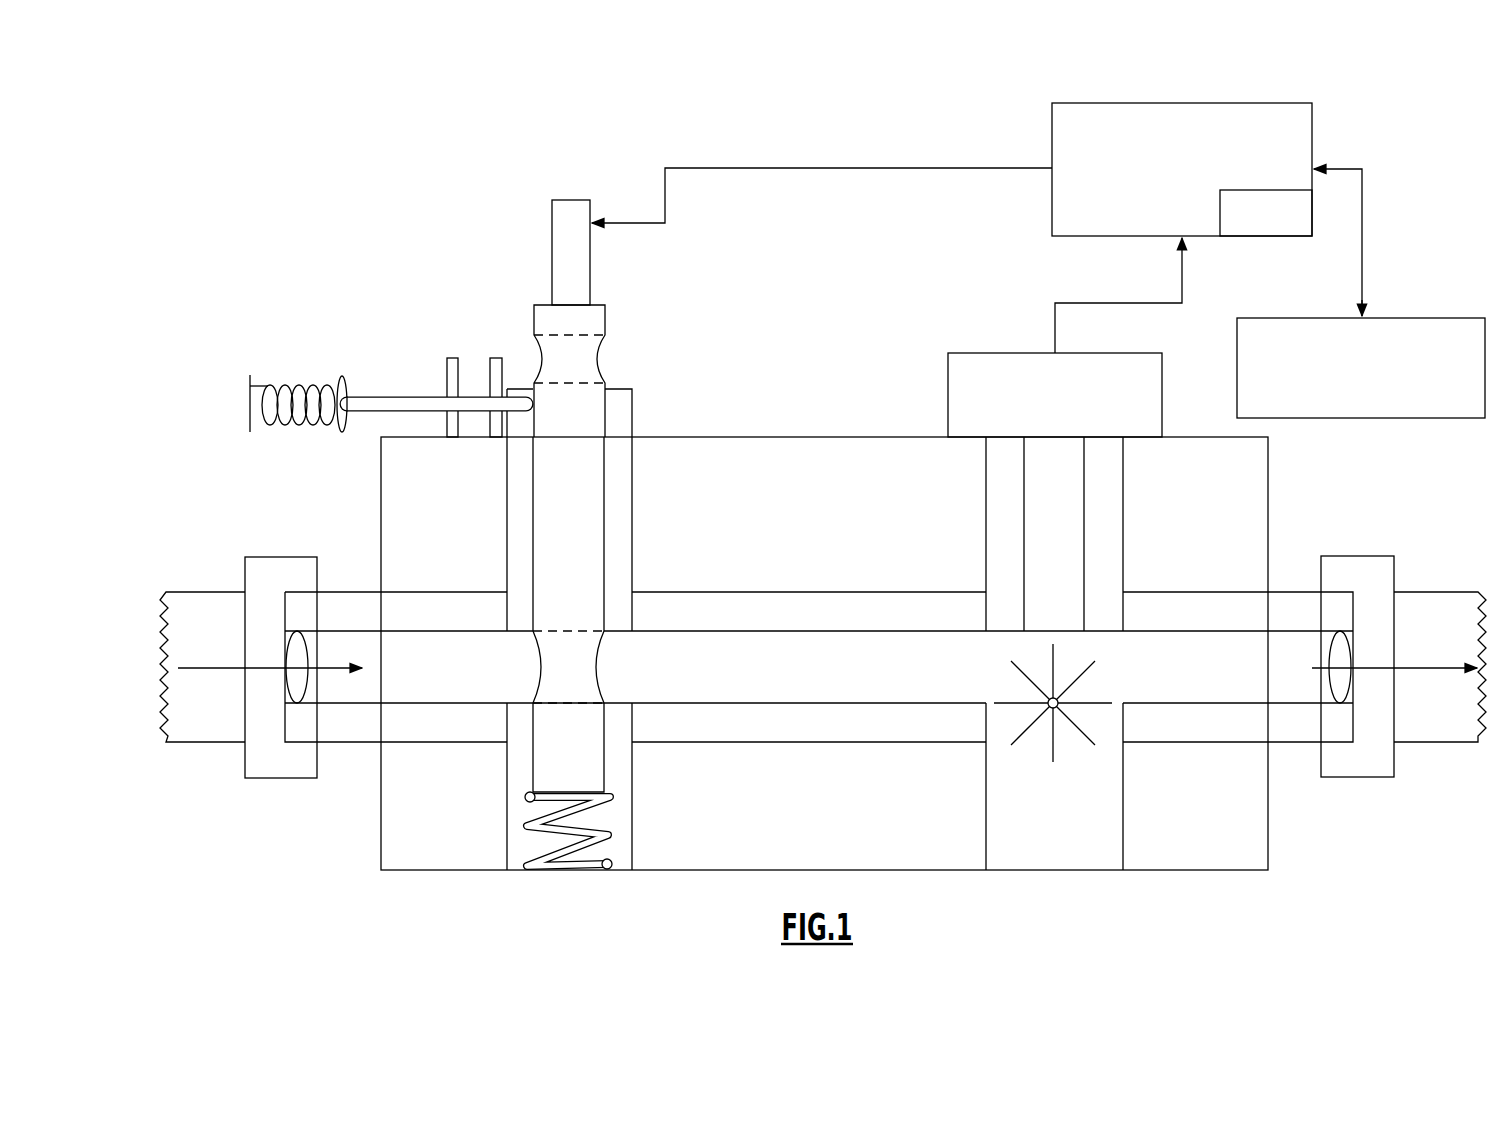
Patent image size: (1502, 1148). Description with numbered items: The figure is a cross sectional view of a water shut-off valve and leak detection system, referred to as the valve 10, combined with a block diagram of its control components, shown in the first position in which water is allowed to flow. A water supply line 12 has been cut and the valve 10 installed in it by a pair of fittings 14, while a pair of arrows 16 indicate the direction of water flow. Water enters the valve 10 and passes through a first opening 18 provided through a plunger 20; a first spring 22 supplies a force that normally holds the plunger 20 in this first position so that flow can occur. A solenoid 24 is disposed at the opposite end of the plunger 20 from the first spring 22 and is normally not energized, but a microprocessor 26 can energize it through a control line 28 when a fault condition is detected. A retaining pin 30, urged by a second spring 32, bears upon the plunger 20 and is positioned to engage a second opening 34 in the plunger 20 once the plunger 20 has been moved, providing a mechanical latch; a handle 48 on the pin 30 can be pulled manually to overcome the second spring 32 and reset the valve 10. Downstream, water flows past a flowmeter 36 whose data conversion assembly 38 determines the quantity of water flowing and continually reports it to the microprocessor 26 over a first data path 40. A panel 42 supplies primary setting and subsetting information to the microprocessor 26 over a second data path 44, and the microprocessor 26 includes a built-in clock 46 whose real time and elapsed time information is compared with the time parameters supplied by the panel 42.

The water shut-off valve and leak detection system 10 is at (610, 169).
The water supply line 12 is at (217, 742).
The fittings 14 is at (270, 778).
The arrows 16 is at (185, 668).
The first opening 18 is at (545, 668).
The plunger 20 is at (533, 778).
The first spring 22 is at (612, 862).
The solenoid 24 is at (560, 248).
The microprocessor 26 is at (1052, 133).
The control line 28 is at (795, 168).
The retaining pin 30 is at (367, 396).
The second spring 32 is at (300, 427).
The second opening 34 is at (603, 350).
The flowmeter 36 is at (1085, 672).
The data conversion assembly 38 is at (946, 385).
The first data path 40 is at (1098, 303).
The panel 42 is at (1375, 419).
The second data path 44 is at (1364, 238).
The clock 46 is at (1252, 237).
The handle 48 is at (340, 378).